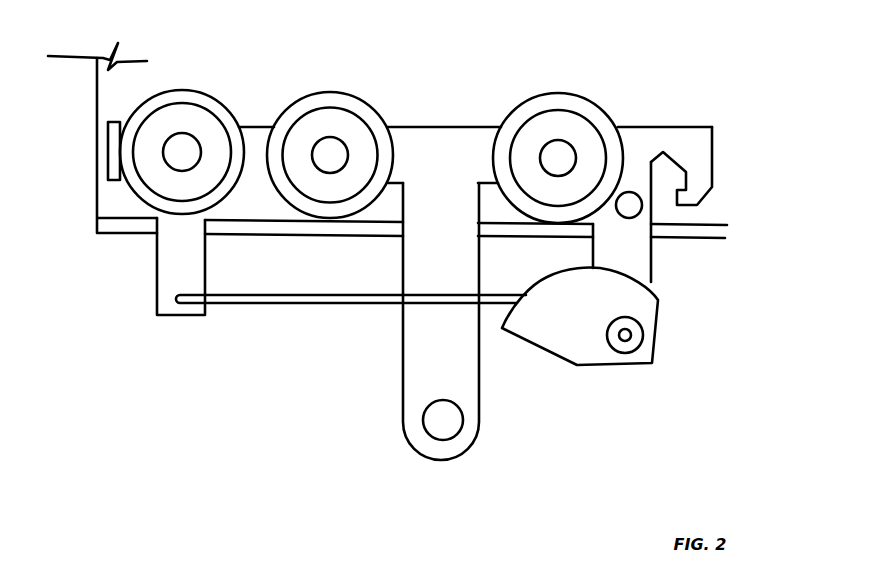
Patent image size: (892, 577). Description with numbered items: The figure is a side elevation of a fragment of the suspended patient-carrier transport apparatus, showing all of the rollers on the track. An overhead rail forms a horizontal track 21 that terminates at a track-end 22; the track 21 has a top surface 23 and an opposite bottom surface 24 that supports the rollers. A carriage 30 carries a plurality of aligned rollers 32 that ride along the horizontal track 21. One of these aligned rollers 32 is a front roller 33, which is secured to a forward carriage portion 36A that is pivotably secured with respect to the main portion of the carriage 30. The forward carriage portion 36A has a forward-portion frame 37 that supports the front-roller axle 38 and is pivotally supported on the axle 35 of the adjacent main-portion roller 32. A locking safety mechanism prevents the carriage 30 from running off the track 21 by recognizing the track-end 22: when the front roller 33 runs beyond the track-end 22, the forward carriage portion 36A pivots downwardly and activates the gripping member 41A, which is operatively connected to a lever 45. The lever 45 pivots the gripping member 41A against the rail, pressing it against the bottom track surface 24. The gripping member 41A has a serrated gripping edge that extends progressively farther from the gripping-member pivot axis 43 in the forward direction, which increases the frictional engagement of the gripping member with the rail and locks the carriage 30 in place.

The horizontal track 21 is at (680, 230).
The track-end 22 is at (98, 227).
The top surface 23 is at (120, 217).
The bottom surface 24 is at (142, 237).
The carriage 30 is at (437, 162).
The aligned rollers 32 is at (367, 218).
The front roller 33 is at (172, 93).
The axle 35 is at (332, 160).
The forward carriage portion 36A is at (255, 190).
The stop 37 is at (112, 140).
The front-roller axle 38 is at (178, 158).
The gripping member 41A is at (596, 292).
The gripping-member pivot axis 43 is at (625, 335).
The lever 45 is at (367, 302).